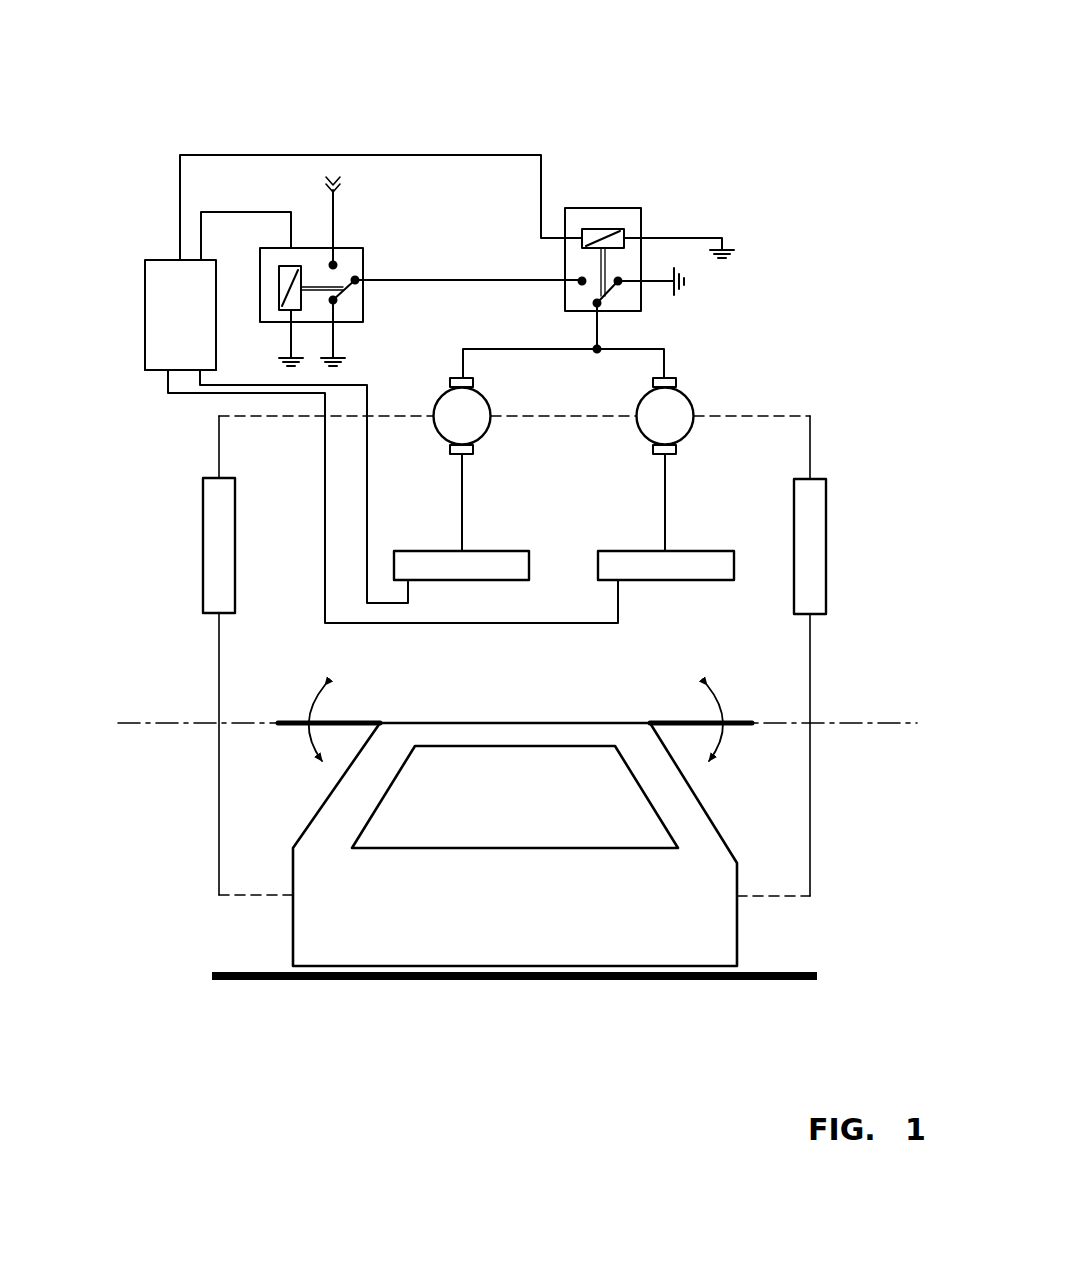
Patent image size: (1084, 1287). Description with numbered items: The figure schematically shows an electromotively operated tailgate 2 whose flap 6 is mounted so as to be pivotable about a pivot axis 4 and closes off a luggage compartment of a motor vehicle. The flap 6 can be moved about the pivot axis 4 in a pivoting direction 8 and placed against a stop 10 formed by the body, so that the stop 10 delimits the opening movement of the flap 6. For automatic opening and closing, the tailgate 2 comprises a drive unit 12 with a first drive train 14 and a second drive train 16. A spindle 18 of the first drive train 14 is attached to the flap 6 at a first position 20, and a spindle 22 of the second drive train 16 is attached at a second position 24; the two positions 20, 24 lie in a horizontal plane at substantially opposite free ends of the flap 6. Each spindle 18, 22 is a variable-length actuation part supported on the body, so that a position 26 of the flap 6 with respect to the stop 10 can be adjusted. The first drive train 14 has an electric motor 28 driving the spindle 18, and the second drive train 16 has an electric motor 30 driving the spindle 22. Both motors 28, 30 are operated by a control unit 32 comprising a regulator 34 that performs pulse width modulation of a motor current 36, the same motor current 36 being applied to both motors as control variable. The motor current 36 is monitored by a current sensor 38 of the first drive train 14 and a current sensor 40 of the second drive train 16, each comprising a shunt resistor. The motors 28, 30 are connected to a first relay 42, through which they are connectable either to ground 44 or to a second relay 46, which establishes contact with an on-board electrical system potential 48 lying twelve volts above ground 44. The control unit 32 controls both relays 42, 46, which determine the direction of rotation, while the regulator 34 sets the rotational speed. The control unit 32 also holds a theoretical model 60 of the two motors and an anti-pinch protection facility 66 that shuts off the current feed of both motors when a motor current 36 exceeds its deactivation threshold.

The electromotively operated tailgate 2 is at (765, 80).
The pivot axis 4 is at (740, 720).
The flap 6 is at (713, 923).
The pivoting direction 8 is at (722, 742).
The stop 10 is at (268, 980).
The drive unit 12 is at (778, 260).
The first drive train 14 is at (828, 370).
The second drive train 16 is at (200, 462).
The spindle 18 is at (826, 540).
The first position 20 is at (740, 895).
The spindle 22 is at (203, 533).
The second position 24 is at (288, 897).
The position 26 is at (300, 812).
The electric motor 28 is at (691, 396).
The electric motor 30 is at (434, 400).
The control unit 32 is at (160, 293).
The regulator 34 is at (160, 350).
The motor current 36 is at (165, 387).
The current sensor 38 is at (708, 551).
The current sensor 40 is at (439, 551).
The first relay 42 is at (618, 216).
The ground 44 is at (343, 356).
The second relay 46 is at (315, 253).
The on-board electrical system potential 48 is at (333, 175).
The theoretical model 60 is at (158, 268).
The anti-pinch protection facility 66 is at (173, 265).